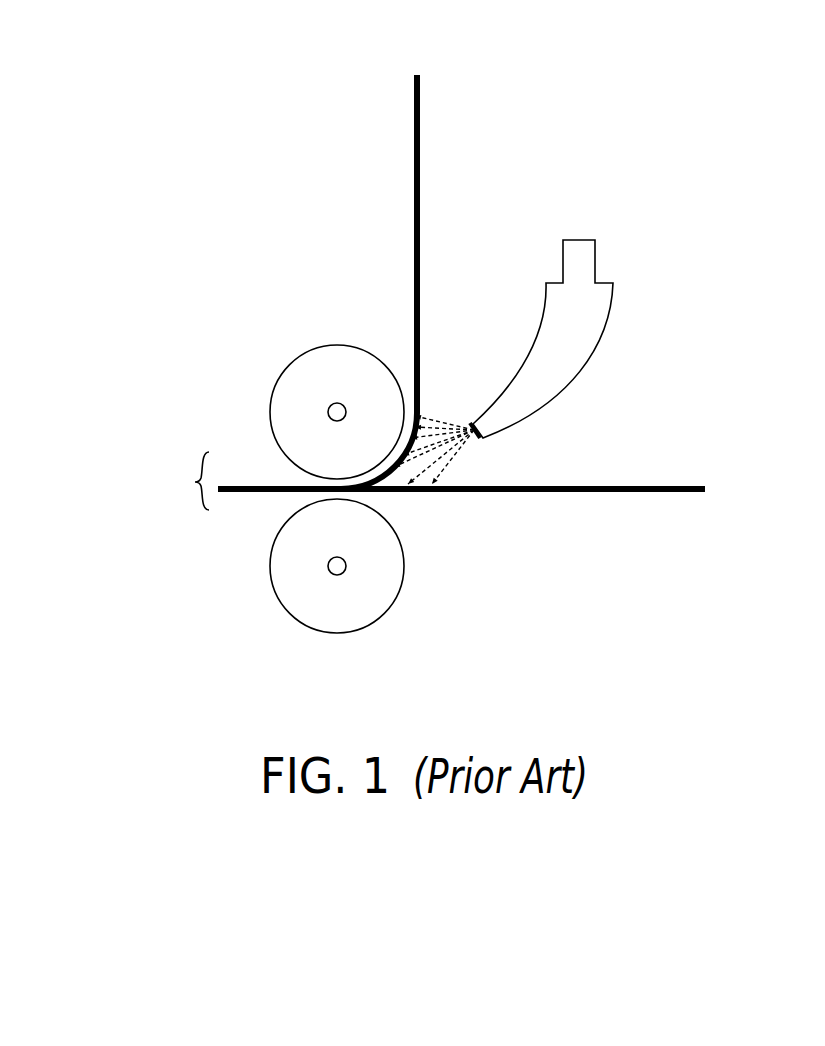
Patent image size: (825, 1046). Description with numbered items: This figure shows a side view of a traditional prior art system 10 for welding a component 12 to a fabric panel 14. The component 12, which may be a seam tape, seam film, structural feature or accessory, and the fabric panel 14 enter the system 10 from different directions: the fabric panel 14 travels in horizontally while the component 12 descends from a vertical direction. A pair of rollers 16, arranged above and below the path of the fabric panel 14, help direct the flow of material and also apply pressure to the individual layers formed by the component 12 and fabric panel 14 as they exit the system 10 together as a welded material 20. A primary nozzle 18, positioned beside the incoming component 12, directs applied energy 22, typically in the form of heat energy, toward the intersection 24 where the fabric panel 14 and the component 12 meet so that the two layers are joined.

The system 10 is at (251, 266).
The component 12 is at (434, 131).
The fabric panel 14 is at (578, 493).
The rollers 16 is at (300, 407).
The primary nozzle 18 is at (587, 330).
The welded material 20 is at (195, 482).
The applied energy 22 is at (465, 458).
The intersection 24 is at (407, 470).